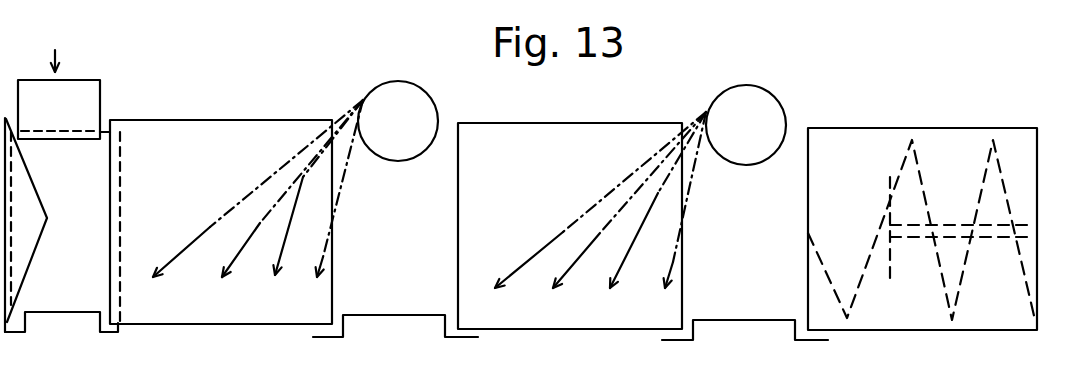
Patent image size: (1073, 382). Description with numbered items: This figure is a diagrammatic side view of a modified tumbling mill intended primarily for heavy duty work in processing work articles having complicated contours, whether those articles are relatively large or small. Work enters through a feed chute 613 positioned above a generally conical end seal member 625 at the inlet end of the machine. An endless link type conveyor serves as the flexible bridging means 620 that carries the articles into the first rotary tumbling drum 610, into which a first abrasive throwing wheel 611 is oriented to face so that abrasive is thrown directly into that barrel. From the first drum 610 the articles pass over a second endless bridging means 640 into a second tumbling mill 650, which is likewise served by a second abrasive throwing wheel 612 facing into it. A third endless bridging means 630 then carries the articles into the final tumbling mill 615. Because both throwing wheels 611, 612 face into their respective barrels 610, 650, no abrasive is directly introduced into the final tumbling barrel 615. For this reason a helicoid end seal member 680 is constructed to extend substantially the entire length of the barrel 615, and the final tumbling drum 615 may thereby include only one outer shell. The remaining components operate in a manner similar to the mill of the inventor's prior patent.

The first rotary tumbling drum 610 is at (232, 119).
The first abrasive throwing wheel 611 is at (373, 93).
The second abrasive throwing wheel 612 is at (779, 108).
The feed chute 613 is at (85, 86).
The final tumbling mill 615 is at (907, 127).
The flexible bridging means 620 is at (60, 313).
The conical end seal member 625 is at (40, 241).
The third endless bridging means 630 is at (755, 308).
The second endless bridging means 640 is at (398, 303).
The second tumbling mill 650 is at (568, 116).
The helicoid end seal member 680 is at (888, 180).